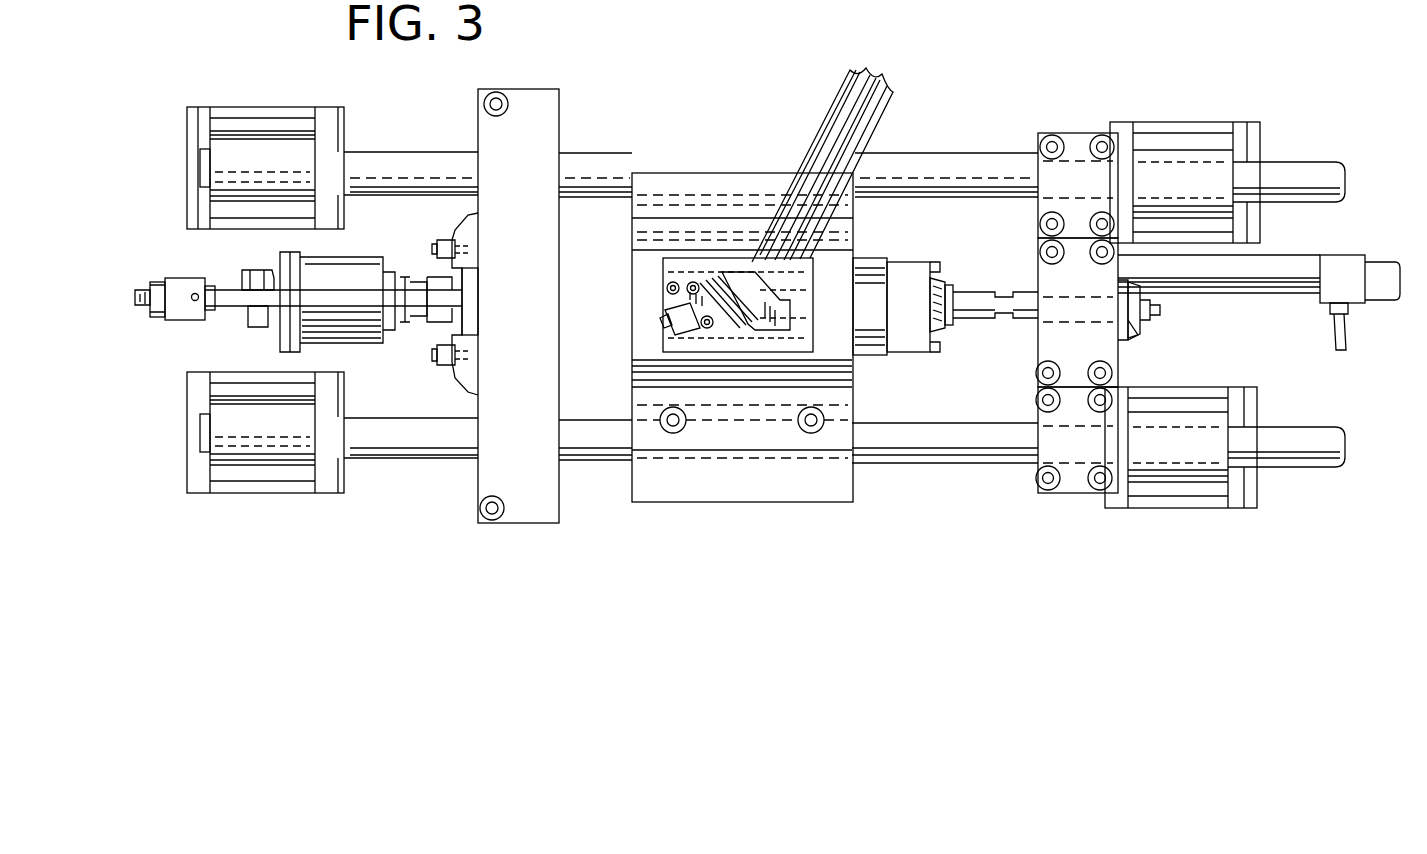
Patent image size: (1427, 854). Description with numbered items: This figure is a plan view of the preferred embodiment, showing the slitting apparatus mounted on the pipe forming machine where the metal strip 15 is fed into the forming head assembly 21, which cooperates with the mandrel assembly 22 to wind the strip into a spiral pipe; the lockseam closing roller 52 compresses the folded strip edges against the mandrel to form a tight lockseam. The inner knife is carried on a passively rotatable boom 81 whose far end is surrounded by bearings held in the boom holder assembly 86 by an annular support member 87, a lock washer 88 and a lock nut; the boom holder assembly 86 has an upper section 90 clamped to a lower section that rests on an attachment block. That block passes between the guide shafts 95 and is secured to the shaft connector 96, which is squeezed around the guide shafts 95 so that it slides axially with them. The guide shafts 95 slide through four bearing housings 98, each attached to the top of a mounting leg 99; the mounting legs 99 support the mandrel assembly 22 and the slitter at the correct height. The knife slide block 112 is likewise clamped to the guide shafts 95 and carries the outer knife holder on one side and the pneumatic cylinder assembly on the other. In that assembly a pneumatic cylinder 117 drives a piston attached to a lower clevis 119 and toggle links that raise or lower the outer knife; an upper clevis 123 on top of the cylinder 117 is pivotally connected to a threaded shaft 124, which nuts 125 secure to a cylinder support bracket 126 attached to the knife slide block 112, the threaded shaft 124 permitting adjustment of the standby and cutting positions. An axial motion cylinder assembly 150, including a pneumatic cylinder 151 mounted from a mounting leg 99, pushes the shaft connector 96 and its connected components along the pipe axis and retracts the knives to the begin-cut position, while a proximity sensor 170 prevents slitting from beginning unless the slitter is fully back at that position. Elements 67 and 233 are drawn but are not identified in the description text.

The metal strip 15 is at (905, 0).
The forming head assembly 21 is at (730, 232).
The mandrel assembly 22 is at (905, 375).
The lockseam closing roller 52 is at (742, 328).
The coupling 67 is at (930, 265).
The boom 81 is at (973, 312).
The boom holder assembly 86 is at (1098, 343).
The annular support member 87 is at (1165, 300).
The lock washer 88 is at (1135, 331).
The upper section 90 is at (1043, 275).
The guide shafts 95 is at (950, 160).
The shaft connector 96 is at (1078, 130).
The bearing housings 98 is at (274, 150).
The mounting legs 99 is at (206, 120).
The knife slide block 112 is at (434, 350).
The pneumatic cylinder 117 is at (362, 286).
The lower clevis 119 is at (457, 385).
The upper clevis 123 is at (284, 342).
The threaded shaft 124 is at (133, 296).
The nuts 125 is at (152, 276).
The cylinder support bracket 126 is at (232, 300).
The axial motion cylinder assembly 150 is at (1279, 325).
The pneumatic cylinder 151 is at (1298, 270).
The proximity sensor 170 is at (703, 535).
The support plate 233 is at (538, 86).